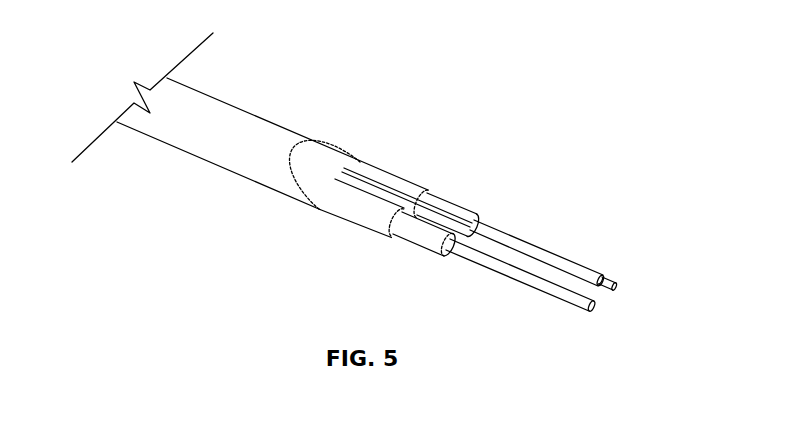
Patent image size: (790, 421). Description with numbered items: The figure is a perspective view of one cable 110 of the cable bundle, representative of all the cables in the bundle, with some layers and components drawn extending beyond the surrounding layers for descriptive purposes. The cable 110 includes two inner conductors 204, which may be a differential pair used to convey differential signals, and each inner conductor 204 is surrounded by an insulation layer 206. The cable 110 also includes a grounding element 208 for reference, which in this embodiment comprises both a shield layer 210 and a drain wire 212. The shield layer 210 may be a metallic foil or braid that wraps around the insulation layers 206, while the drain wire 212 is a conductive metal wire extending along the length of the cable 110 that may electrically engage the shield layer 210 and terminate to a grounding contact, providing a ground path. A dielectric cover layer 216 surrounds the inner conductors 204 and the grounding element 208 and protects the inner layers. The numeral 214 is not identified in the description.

The cable 110 is at (420, 74).
The cover layer 216 is at (272, 136).
The grounding element 208 is at (430, 136).
The shield layer 210 is at (383, 170).
The drain wire 212 is at (375, 178).
The insulation layer 206 is at (462, 206).
The inner conductor 204 is at (604, 297).
The conductor end 214 is at (598, 280).